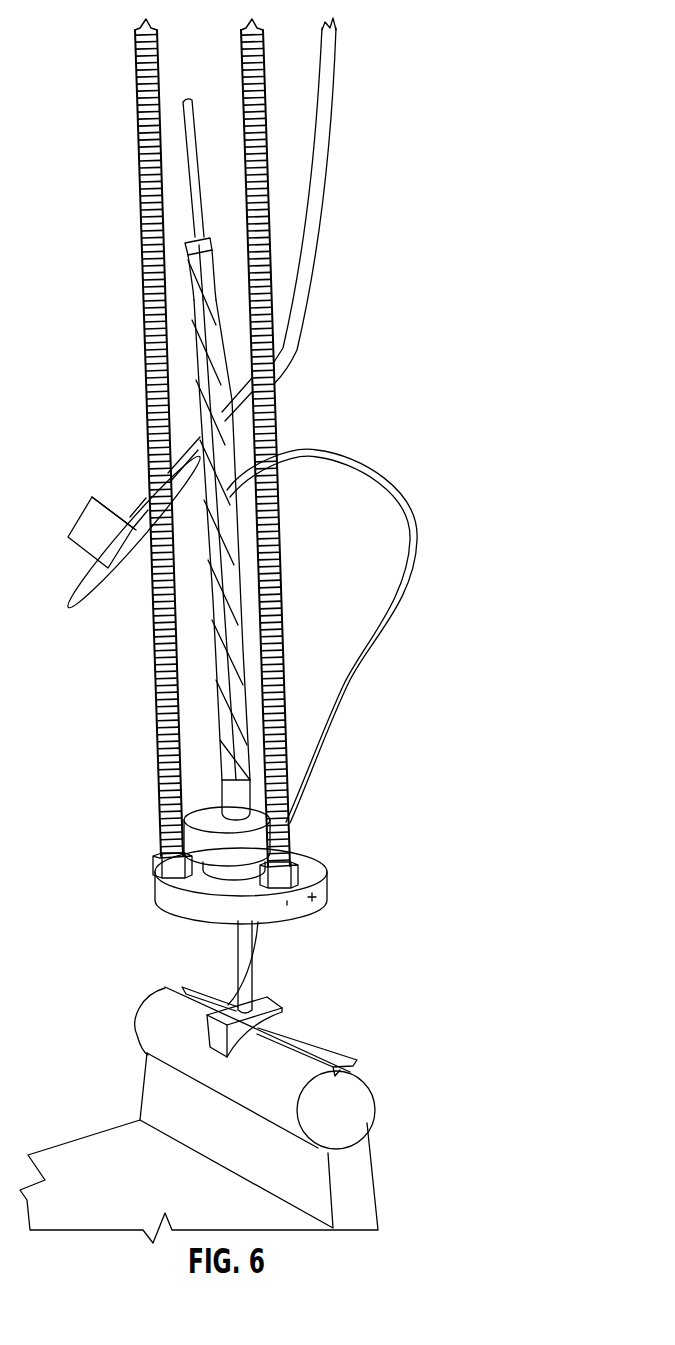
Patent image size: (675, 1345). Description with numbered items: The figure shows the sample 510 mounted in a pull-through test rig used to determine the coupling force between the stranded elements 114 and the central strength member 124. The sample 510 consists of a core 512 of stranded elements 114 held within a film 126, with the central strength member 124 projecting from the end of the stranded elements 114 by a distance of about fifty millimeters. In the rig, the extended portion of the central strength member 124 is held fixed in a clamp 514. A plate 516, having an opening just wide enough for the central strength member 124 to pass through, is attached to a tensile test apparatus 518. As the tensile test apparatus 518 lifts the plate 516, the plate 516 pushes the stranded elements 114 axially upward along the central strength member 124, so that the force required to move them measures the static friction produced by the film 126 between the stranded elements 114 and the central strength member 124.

The stranded elements 114 is at (217, 597).
The central strength member 124 is at (192, 182).
The film 126 is at (200, 270).
The sample 510 is at (176, 332).
The core 512 is at (150, 462).
The clamp 514 is at (340, 1095).
The plate 516 is at (303, 897).
The tensile test apparatus 518 is at (287, 730).